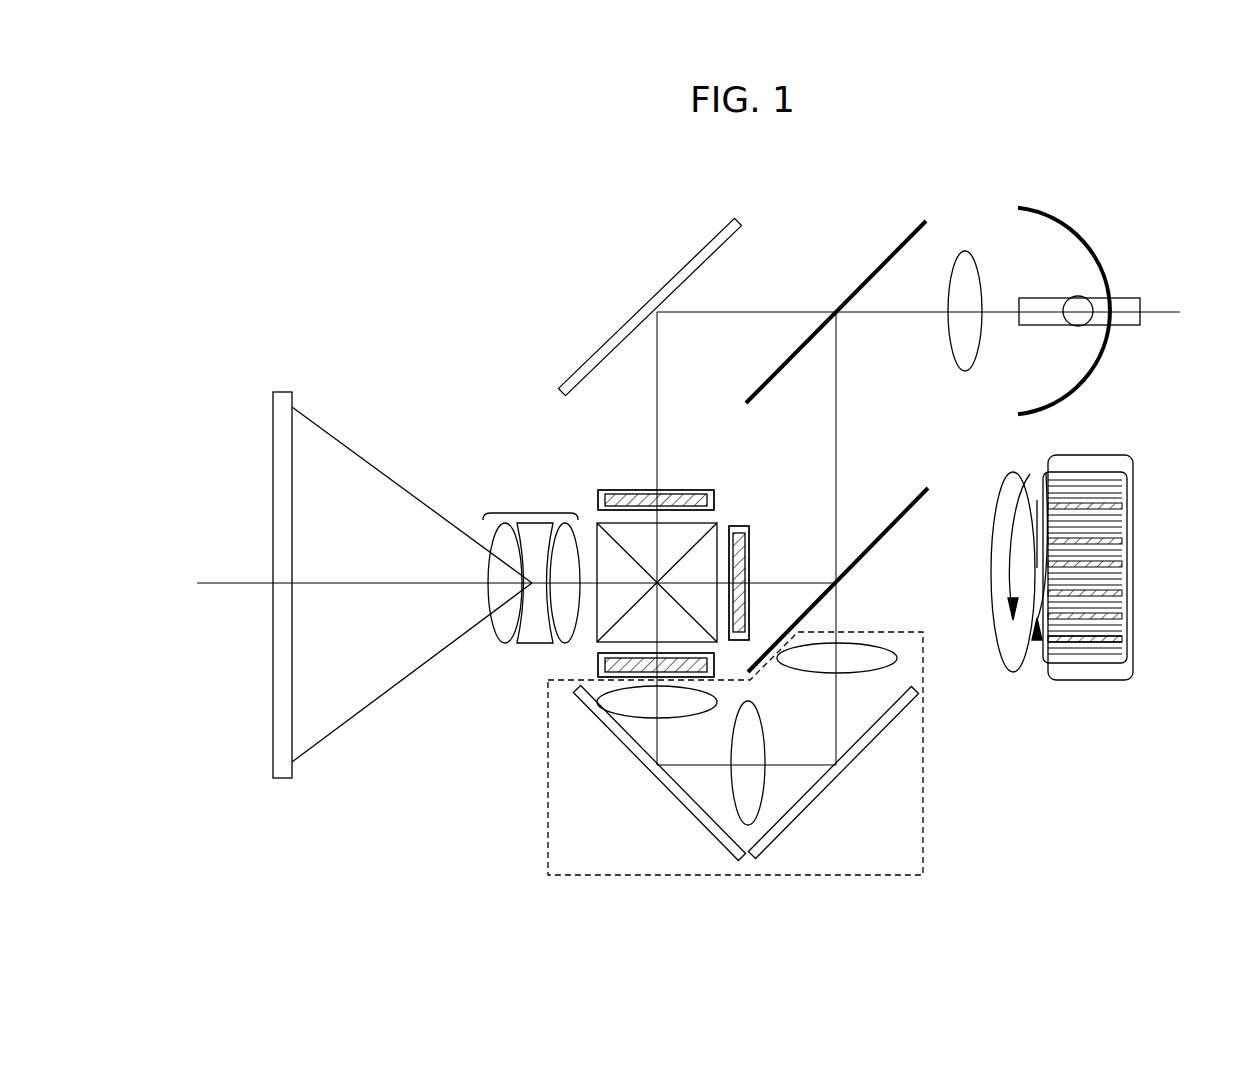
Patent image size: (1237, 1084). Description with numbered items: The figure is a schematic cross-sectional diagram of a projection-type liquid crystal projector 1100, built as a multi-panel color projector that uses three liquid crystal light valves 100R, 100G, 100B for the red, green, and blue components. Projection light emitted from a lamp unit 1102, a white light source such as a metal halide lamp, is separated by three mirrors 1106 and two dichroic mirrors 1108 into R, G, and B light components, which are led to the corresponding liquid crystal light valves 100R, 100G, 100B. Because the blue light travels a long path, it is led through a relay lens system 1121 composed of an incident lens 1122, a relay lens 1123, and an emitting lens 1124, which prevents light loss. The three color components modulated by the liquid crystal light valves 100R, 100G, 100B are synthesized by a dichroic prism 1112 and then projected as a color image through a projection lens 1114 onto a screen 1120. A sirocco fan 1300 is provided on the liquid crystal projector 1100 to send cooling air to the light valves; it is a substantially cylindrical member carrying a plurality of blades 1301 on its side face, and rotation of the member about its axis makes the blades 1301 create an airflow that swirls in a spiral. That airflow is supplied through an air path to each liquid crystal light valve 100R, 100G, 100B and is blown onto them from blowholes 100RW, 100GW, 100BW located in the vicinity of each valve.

The liquid crystal projector 1100 is at (1000, 172).
The lamp unit 1102 is at (1108, 345).
The mirror 1106 is at (728, 226).
The dichroic mirror 1108 is at (858, 290).
The dichroic prism 1112 is at (608, 563).
The projection lens 1114 is at (525, 510).
The screen 1120 is at (292, 660).
The relay lens system 1121 is at (923, 855).
The incident lens 1122 is at (897, 653).
The relay lens 1123 is at (753, 797).
The emitting lens 1124 is at (612, 700).
The sirocco fan 1300 is at (1133, 520).
The blade 1301 is at (1088, 638).
The liquid crystal light valve 100R is at (714, 502).
The liquid crystal light valve 100G is at (737, 535).
The liquid crystal light valve 100B is at (606, 672).
The blowhole 100RW is at (688, 500).
The blowhole 100GW is at (755, 582).
The blowhole 100BW is at (597, 657).